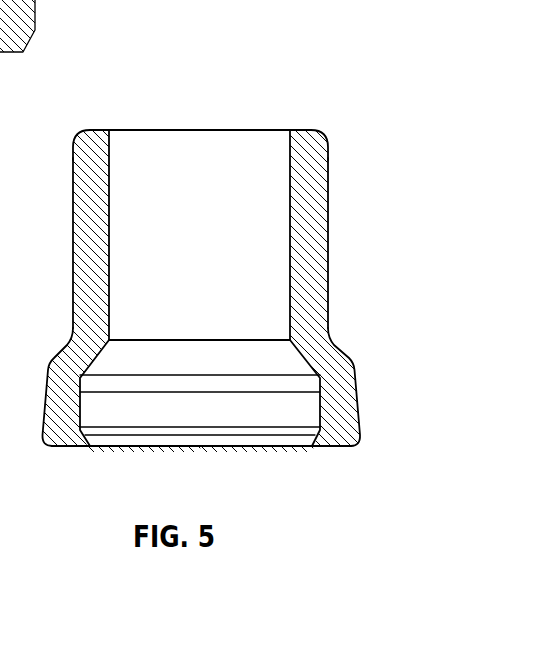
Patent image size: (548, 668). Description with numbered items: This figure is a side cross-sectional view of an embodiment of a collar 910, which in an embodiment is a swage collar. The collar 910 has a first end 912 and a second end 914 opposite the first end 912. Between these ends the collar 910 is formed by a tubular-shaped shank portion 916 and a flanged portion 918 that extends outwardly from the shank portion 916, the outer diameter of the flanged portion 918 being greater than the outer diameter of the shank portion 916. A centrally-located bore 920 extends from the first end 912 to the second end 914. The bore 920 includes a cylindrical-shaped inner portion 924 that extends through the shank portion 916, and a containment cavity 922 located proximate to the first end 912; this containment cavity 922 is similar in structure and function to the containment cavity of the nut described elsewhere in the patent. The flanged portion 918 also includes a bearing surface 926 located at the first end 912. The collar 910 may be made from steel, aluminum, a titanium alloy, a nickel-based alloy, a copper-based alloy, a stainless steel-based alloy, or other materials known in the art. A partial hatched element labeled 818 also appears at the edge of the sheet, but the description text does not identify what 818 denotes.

The adjacent component (partial) 818 is at (27, 28).
The collar 910 is at (225, 334).
The first end 912 is at (53, 447).
The second end 914 is at (97, 130).
The shank portion 916 is at (310, 267).
The flanged portion 918 is at (343, 408).
The bore 920 is at (167, 175).
The containment cavity 922 is at (213, 386).
The inner portion 924 is at (289, 179).
The bearing surface 926 is at (332, 447).